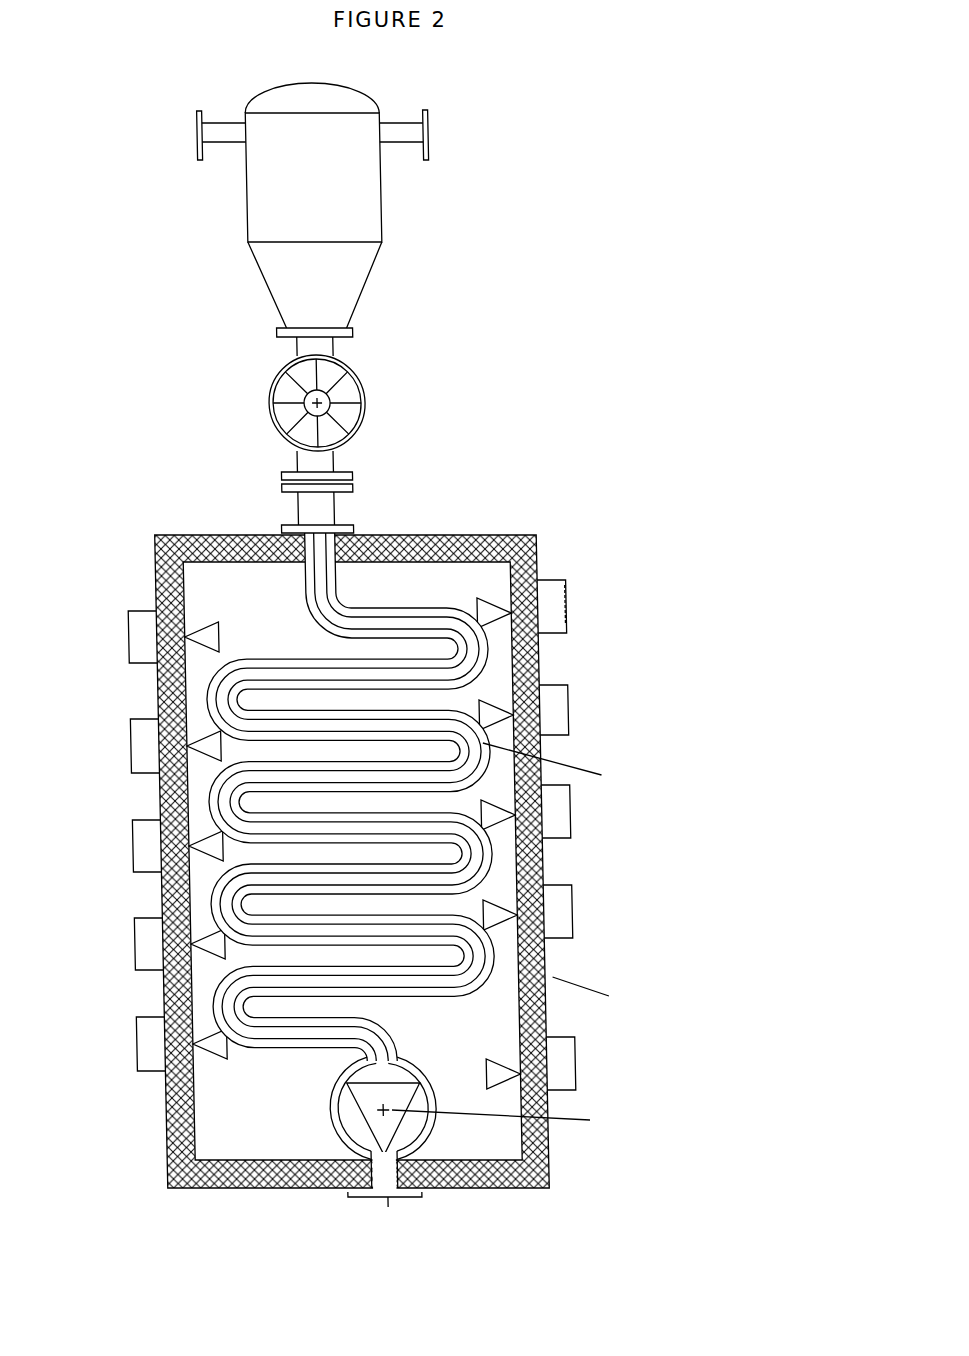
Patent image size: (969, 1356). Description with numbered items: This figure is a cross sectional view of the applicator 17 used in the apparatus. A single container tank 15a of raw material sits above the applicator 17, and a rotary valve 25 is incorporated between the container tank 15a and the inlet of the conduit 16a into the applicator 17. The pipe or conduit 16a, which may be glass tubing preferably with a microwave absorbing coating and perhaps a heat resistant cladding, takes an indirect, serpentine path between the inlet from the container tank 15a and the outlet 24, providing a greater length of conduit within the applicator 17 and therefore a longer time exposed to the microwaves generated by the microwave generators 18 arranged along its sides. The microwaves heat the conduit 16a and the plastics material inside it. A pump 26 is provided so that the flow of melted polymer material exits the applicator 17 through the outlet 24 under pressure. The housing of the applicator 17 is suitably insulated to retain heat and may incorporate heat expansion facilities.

The container tank 15a is at (391, 213).
The rotary valve 25 is at (371, 410).
The conduit 16a is at (330, 588).
The applicator 17 is at (580, 551).
The microwave generators 18 is at (565, 710).
The pump 26 is at (320, 1122).
The outlet 24 is at (400, 1223).